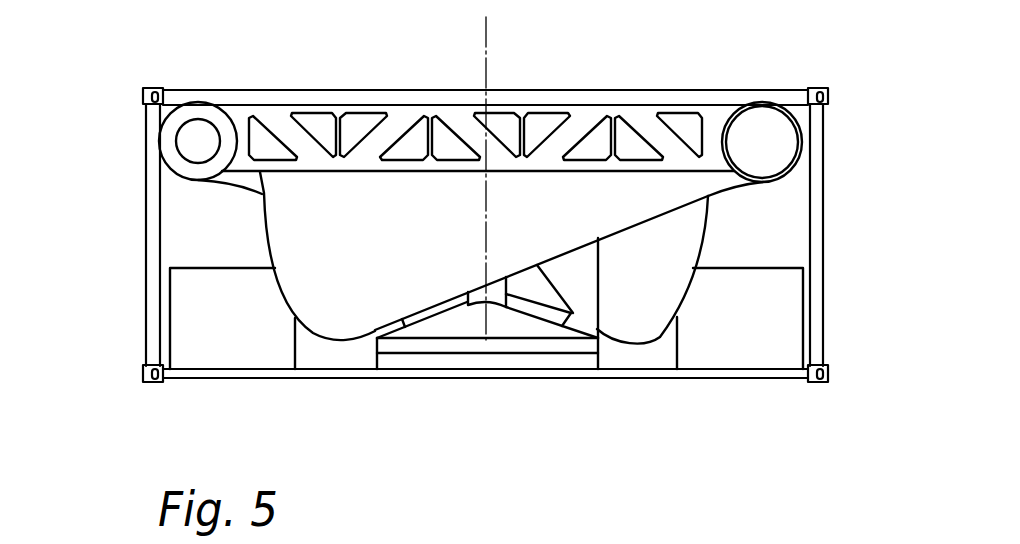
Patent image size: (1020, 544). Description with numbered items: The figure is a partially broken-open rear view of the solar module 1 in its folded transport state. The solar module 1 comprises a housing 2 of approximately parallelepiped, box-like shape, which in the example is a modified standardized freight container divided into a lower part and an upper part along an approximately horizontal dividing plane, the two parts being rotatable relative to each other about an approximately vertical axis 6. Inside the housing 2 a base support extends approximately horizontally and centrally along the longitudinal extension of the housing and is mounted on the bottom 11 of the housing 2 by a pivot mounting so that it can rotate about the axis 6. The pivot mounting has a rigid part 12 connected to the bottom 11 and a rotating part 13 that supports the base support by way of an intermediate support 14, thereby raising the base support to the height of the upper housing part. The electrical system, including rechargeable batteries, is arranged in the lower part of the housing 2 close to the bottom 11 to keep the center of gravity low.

The solar module 1 is at (128, 290).
The housing 2 is at (818, 272).
The axis 6 is at (485, 60).
The bottom 11 is at (343, 373).
The rigid part 12 is at (455, 360).
The rotating part 13 is at (540, 347).
The intermediate support 14 is at (580, 285).